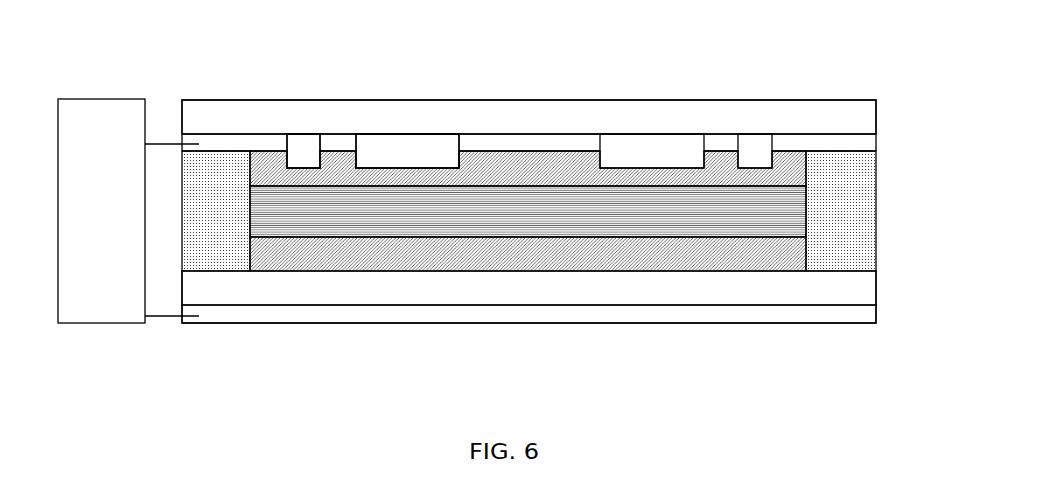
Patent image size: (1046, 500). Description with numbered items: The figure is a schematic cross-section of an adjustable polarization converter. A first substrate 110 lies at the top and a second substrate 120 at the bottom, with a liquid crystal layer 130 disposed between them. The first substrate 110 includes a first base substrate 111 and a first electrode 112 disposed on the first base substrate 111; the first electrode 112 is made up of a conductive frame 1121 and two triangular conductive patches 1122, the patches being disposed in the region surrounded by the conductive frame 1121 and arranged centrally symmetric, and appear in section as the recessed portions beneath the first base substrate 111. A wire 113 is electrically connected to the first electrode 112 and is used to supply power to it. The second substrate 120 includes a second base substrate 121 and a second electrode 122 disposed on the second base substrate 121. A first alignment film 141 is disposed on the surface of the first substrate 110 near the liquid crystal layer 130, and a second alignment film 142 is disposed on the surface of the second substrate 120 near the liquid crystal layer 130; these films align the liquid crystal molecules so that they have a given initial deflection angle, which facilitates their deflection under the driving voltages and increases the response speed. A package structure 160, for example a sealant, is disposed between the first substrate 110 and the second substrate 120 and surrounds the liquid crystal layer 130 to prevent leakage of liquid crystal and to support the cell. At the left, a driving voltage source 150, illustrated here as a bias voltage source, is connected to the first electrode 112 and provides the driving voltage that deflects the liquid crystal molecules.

The first substrate 110 is at (887, 100).
The first base substrate 111 is at (553, 117).
The first electrode 112 is at (493, 53).
The conductive frame 1121 is at (302, 147).
The triangular conductive patches 1122 is at (403, 147).
The wire 113 is at (792, 142).
The second substrate 120 is at (887, 267).
The second base substrate 121 is at (368, 288).
The second electrode 122 is at (558, 311).
The liquid crystal layer 130 is at (773, 219).
The first alignment film 141 is at (680, 167).
The second alignment film 142 is at (650, 253).
The driving voltage source 150 is at (128, 211).
The package structure 160 is at (213, 167).